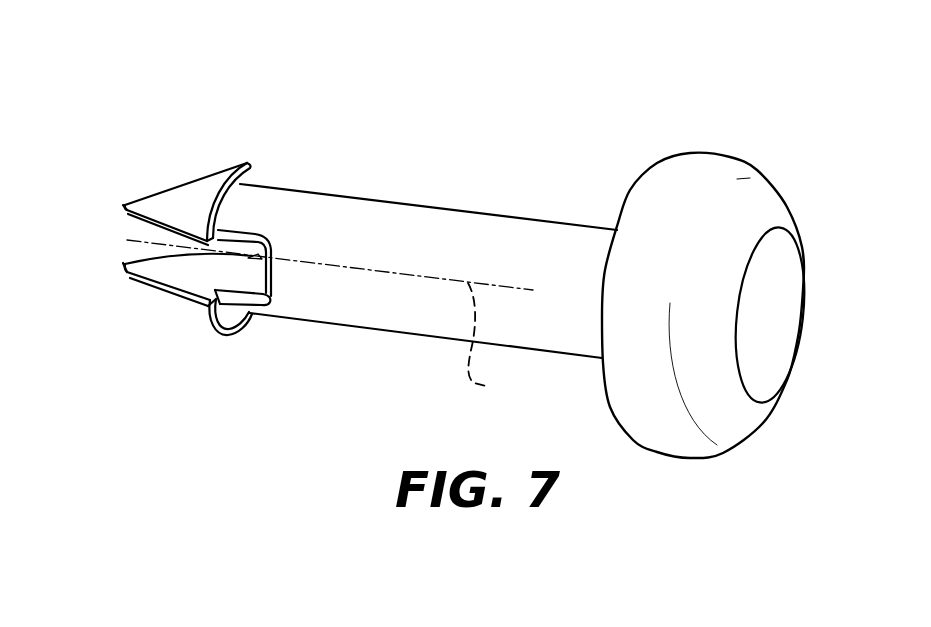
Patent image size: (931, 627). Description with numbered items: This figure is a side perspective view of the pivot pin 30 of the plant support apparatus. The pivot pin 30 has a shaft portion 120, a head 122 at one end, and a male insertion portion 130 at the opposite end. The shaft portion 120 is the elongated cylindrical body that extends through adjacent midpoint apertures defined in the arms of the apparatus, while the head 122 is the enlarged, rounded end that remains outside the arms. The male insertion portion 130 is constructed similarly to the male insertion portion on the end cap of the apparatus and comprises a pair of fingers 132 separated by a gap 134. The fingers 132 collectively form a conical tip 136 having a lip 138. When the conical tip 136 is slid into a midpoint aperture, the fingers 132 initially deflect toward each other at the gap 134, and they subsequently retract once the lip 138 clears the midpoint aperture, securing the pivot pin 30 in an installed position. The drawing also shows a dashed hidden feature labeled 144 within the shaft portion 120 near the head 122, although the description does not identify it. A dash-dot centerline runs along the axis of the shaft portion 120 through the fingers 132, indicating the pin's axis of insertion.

The pivot pin 30 is at (620, 89).
The shaft portion 120 is at (455, 227).
The head 122 is at (779, 198).
The male insertion portion 130 is at (268, 345).
The fingers 132 is at (189, 184).
The gap 134 is at (148, 249).
The tip 136 is at (124, 207).
The lip 138 is at (252, 174).
The hidden channel 144 is at (505, 341).